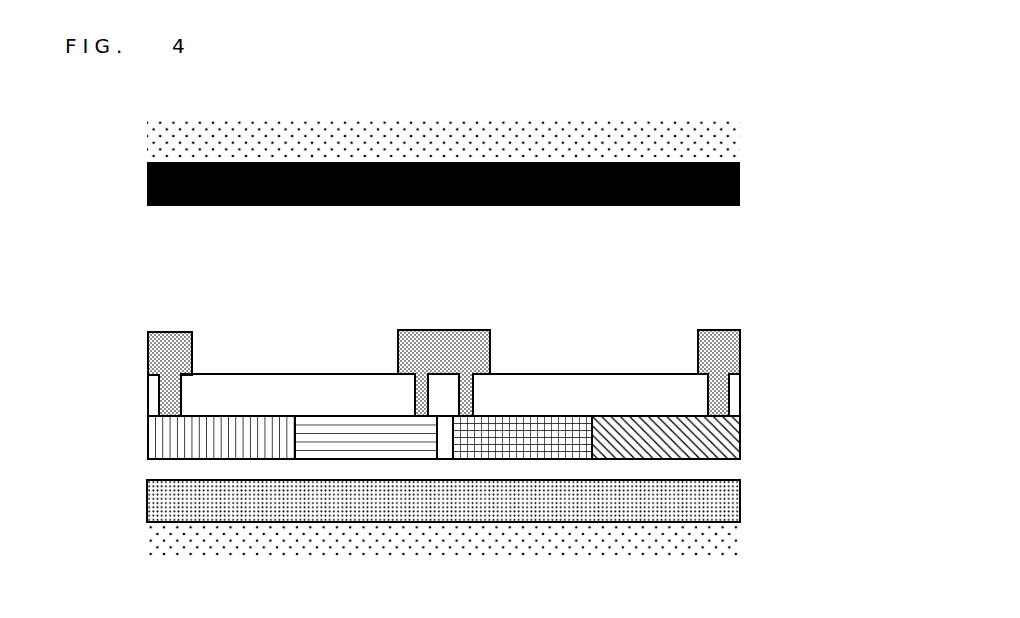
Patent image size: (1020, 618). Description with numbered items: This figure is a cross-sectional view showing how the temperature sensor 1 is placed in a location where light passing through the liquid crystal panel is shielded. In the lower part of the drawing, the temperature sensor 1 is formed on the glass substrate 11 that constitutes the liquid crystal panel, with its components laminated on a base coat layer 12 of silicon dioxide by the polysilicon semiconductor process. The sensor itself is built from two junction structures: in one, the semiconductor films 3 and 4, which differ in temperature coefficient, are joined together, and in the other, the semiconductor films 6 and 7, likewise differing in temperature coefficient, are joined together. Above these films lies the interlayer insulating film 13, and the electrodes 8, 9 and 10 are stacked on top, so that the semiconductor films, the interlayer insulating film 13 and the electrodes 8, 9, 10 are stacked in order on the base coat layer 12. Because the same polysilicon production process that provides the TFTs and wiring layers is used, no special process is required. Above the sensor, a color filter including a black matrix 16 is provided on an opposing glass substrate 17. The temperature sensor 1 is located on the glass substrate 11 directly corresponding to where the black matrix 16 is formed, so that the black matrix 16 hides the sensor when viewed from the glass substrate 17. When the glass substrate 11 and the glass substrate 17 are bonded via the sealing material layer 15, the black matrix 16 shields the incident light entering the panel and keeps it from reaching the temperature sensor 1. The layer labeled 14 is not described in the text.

The temperature sensor 1 is at (138, 332).
The semiconductor film 3 is at (227, 448).
The semiconductor film 4 is at (365, 448).
The semiconductor film 6 is at (525, 458).
The semiconductor film 7 is at (673, 458).
The electrode 8 is at (172, 332).
The electrode 9 is at (445, 330).
The electrode 10 is at (720, 330).
The glass substrate 11 is at (740, 542).
The base coat layer 12 is at (735, 467).
The interlayer insulating film 13 is at (293, 374).
The gate electrode layer 14 is at (740, 504).
The sealing material layer 15 is at (712, 237).
The black matrix 16 is at (740, 185).
The glass substrate 17 is at (733, 146).